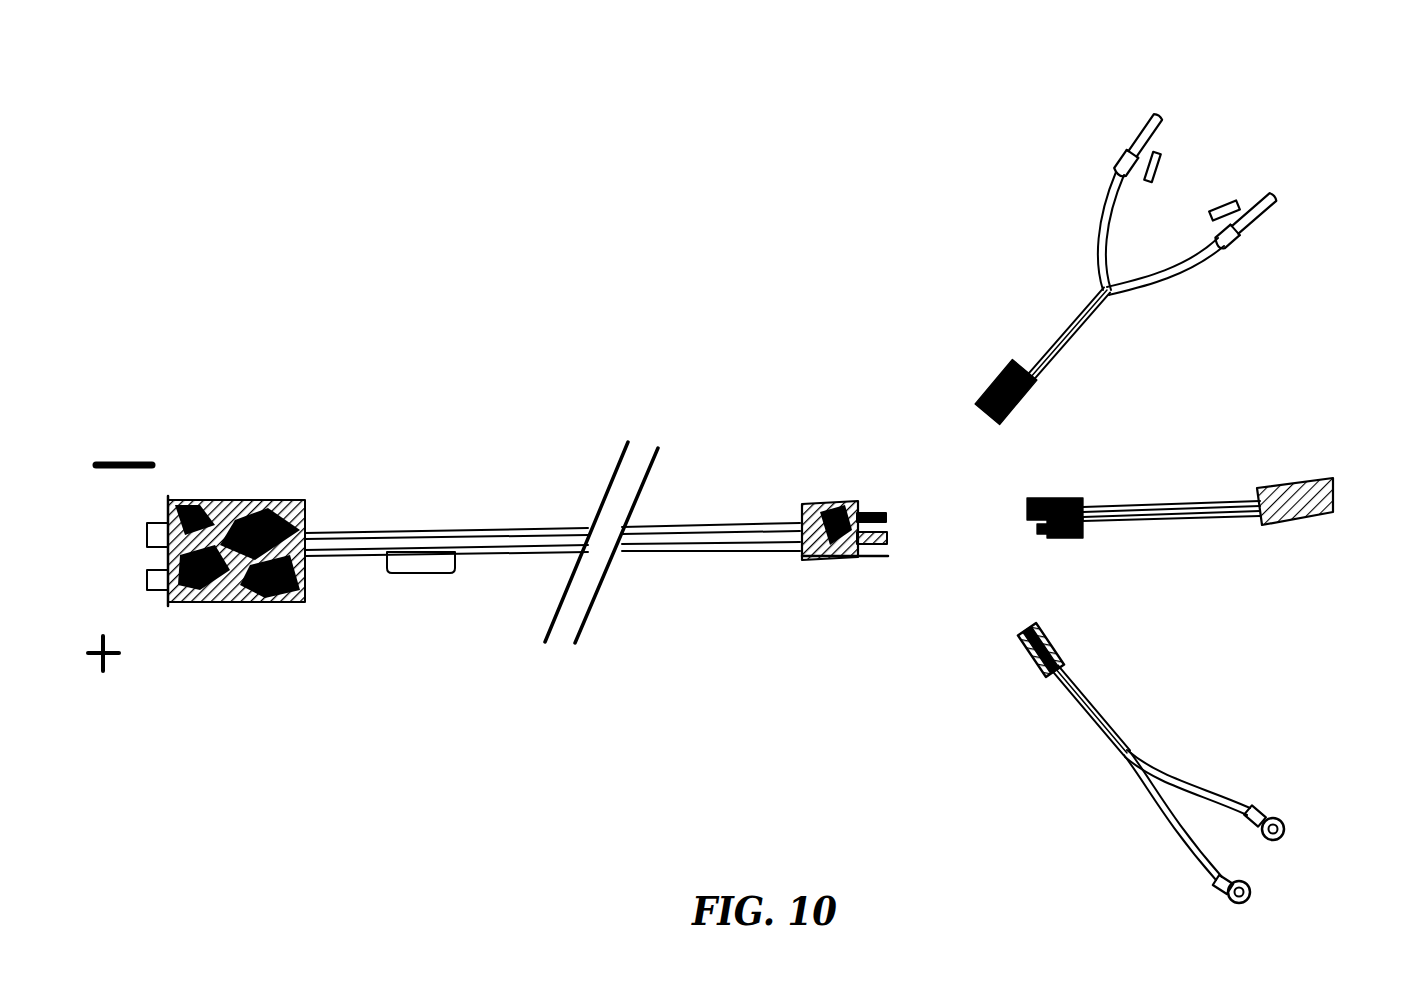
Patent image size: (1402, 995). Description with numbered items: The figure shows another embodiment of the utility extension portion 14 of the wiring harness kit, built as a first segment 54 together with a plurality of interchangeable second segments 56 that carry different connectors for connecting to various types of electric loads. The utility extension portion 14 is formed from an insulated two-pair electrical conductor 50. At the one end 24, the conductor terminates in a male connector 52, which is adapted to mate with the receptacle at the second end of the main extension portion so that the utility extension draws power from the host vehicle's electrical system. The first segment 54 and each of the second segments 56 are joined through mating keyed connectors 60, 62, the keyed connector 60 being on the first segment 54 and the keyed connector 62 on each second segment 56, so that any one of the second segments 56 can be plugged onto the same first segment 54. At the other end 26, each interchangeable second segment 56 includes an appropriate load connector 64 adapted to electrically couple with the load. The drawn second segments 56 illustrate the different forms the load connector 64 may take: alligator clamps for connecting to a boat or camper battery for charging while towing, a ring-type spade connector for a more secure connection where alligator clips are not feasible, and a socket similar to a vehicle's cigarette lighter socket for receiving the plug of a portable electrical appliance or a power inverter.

The utility extension portion 14 is at (737, 365).
The one end 24 is at (327, 485).
The other end 26 is at (1257, 247).
The insulated two-pair electrical conductor 50 is at (690, 527).
The male connector 52 is at (210, 500).
The first segment 54 is at (505, 528).
The interchangeable second segments 56 is at (1050, 337).
The keyed connector 60 is at (818, 503).
The keyed connector 62 is at (1040, 635).
The load connector 64 is at (427, 577).